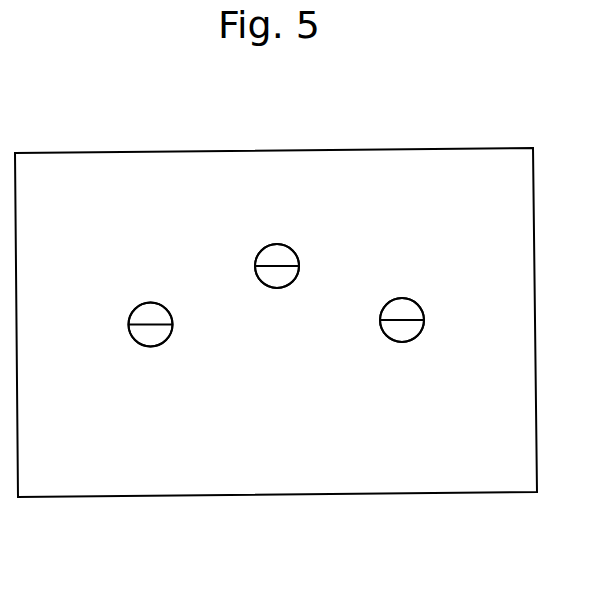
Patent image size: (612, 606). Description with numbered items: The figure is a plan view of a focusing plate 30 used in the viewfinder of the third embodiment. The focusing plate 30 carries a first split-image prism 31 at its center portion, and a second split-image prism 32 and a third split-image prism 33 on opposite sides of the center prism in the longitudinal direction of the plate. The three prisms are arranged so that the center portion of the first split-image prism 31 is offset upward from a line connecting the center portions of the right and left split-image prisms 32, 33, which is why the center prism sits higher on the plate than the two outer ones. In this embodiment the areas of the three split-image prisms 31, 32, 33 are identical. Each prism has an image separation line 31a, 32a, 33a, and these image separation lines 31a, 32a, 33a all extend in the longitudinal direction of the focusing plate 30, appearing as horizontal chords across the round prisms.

The focusing plate 30 is at (507, 240).
The first split-image prism 31 is at (292, 282).
The image separation line 31a is at (273, 262).
The second split-image prism 32 is at (163, 343).
The image separation line 32a is at (147, 324).
The third split-image prism 33 is at (416, 337).
The image separation line 33a is at (397, 318).